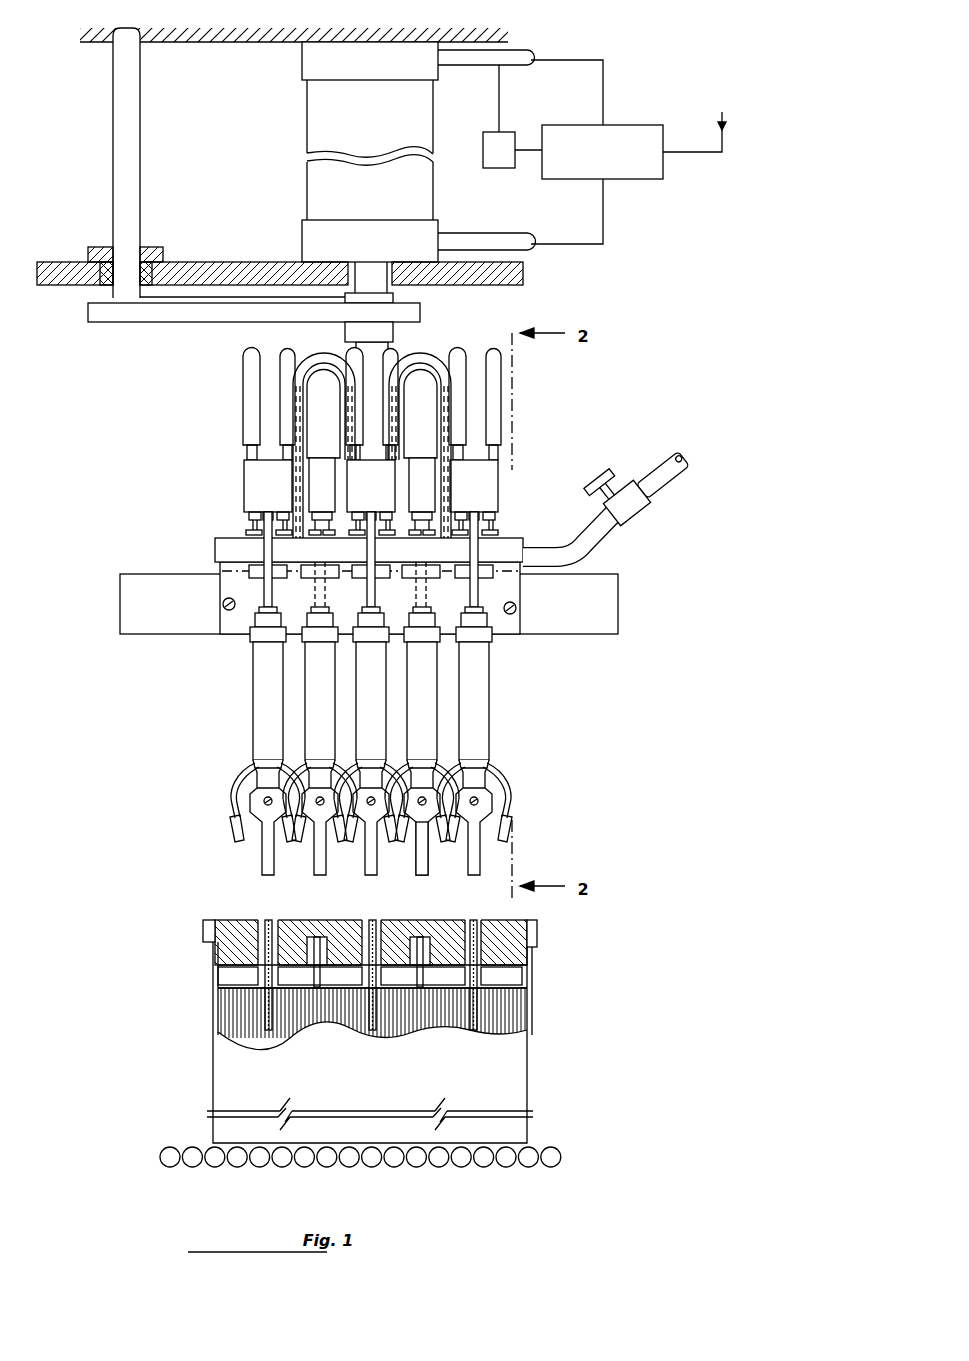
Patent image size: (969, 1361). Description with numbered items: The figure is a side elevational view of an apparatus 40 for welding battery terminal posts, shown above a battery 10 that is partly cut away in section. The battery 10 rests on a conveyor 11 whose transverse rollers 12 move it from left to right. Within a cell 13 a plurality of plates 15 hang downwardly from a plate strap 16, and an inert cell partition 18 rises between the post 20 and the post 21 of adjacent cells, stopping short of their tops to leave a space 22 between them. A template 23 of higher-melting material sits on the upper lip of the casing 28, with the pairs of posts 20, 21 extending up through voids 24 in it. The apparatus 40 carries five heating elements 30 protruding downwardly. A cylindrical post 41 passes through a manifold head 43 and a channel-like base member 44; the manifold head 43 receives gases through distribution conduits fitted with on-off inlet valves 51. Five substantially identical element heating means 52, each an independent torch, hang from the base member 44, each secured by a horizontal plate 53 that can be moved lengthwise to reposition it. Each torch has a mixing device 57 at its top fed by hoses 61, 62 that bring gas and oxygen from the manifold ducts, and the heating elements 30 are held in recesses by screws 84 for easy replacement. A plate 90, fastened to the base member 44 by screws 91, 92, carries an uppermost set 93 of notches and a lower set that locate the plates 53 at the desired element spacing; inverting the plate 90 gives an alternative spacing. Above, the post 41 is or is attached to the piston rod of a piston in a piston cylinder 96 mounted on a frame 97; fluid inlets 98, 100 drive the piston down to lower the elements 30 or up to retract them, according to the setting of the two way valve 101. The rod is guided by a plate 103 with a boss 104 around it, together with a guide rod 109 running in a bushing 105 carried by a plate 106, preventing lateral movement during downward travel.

The battery 10 is at (392, 1038).
The conveyor 11 is at (556, 1146).
The transverse rollers 12 is at (338, 1160).
The cell 13 is at (505, 1007).
The plates 15 is at (230, 1015).
The plate strap 16 is at (445, 977).
The cell partition 18 is at (475, 978).
The post 20 is at (259, 920).
The post 21 is at (272, 920).
The space 22 is at (474, 920).
The template 23 is at (203, 932).
The voids 24 is at (252, 920).
The casing 28 is at (213, 976).
The heating elements 30 is at (427, 866).
The apparatus 40 is at (435, 470).
The post 41 is at (375, 357).
The manifold head 43 is at (222, 538).
The base member 44 is at (600, 612).
The on-off inlet valves 51 is at (627, 495).
The element heating means 52 is at (396, 741).
The horizontal plate 53 is at (262, 643).
The mixing device 57 is at (492, 489).
The hose 61 is at (456, 367).
The hose 62 is at (497, 390).
The screws 84 is at (490, 800).
The plate 90 is at (232, 630).
The screw 91 is at (511, 622).
The screw 92 is at (221, 605).
The uppermost set of notches 93 is at (432, 577).
The piston cylinder 96 is at (318, 187).
The frame 97 is at (229, 43).
The fluid inlet 98 is at (522, 62).
The fluid inlet 100 is at (495, 240).
The two way valve 101 is at (642, 172).
The plate 103 is at (153, 313).
The boss 104 is at (350, 331).
The bushing 105 is at (152, 247).
The plate 106 is at (60, 276).
The guide rod 109 is at (122, 187).